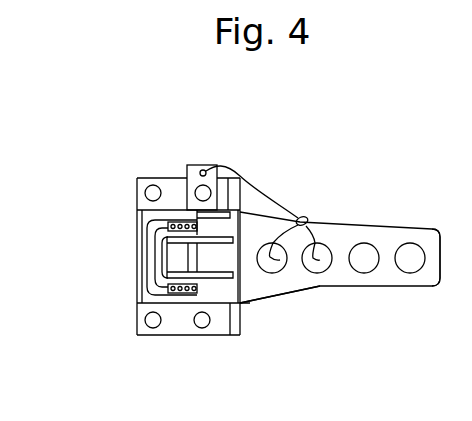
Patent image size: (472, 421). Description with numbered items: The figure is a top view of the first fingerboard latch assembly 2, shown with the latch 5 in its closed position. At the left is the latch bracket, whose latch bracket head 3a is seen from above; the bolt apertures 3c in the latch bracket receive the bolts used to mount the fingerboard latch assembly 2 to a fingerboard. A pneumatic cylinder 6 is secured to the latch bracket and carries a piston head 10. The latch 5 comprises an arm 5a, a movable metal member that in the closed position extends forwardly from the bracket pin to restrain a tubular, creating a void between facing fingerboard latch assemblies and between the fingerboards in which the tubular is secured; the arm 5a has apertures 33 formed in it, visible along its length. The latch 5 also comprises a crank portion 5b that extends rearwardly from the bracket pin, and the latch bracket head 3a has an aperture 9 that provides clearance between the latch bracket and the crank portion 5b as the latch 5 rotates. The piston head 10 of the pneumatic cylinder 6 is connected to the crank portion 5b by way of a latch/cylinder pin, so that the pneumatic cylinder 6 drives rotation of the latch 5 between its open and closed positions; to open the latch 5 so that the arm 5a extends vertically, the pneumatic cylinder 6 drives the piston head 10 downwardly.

The fingerboard latch assembly 2 is at (307, 157).
The latch bracket head 3a is at (173, 182).
The bolt apertures 3c is at (200, 323).
The latch 5 is at (428, 286).
The arm 5a is at (427, 228).
The crank portion 5b is at (222, 282).
The pneumatic cylinder 6 is at (140, 218).
The aperture 9 is at (155, 248).
The piston head 10 is at (177, 262).
The apertures 33 is at (363, 262).